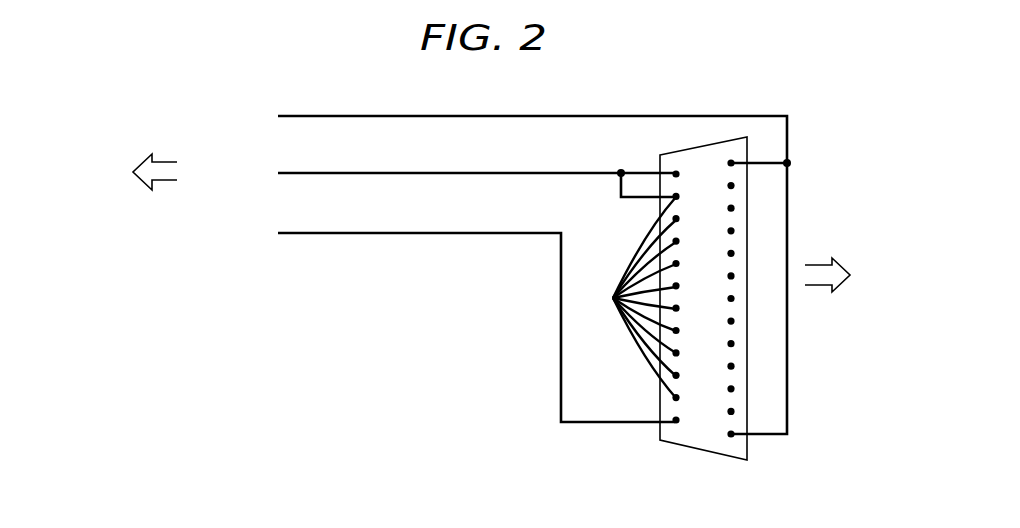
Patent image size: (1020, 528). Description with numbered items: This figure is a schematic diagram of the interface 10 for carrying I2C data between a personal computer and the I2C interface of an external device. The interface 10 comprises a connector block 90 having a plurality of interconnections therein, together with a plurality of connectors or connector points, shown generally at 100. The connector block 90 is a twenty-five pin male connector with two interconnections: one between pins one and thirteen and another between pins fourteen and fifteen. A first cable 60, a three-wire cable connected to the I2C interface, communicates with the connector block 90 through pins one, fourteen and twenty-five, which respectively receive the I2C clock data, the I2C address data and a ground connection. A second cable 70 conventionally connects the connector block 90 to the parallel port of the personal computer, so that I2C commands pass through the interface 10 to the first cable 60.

The interface 10 is at (360, 368).
The first cable 60 is at (165, 161).
The second cable 70 is at (818, 262).
The connector block 90 is at (700, 452).
The connector points 100 is at (626, 297).